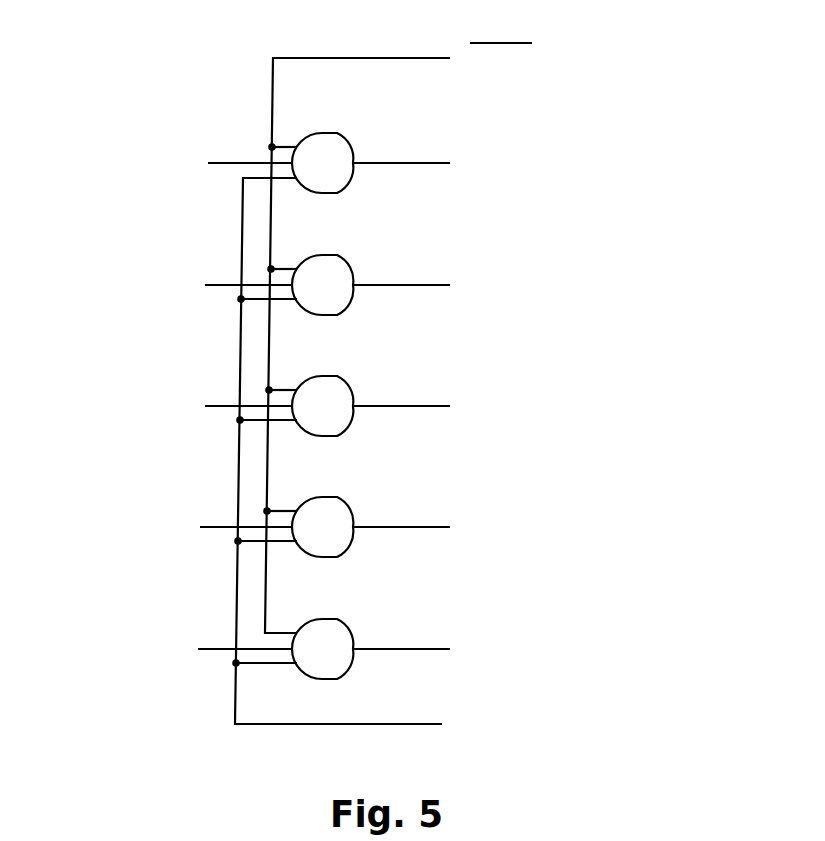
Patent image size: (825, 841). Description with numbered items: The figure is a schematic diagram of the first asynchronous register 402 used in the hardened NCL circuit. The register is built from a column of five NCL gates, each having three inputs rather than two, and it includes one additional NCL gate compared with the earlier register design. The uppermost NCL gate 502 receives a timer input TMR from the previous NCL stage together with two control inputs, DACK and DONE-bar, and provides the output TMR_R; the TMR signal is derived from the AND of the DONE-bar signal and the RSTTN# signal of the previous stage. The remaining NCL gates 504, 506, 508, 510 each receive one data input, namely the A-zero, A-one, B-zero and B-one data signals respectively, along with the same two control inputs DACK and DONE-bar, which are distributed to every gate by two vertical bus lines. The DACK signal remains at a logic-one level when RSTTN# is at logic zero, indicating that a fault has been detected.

The first asynchronous register 402 is at (720, 88).
The NCL gate 502 is at (322, 133).
The NCL gate 504 is at (322, 255).
The NCL gate 506 is at (322, 376).
The NCL gate 508 is at (322, 497).
The NCL gate 510 is at (322, 619).